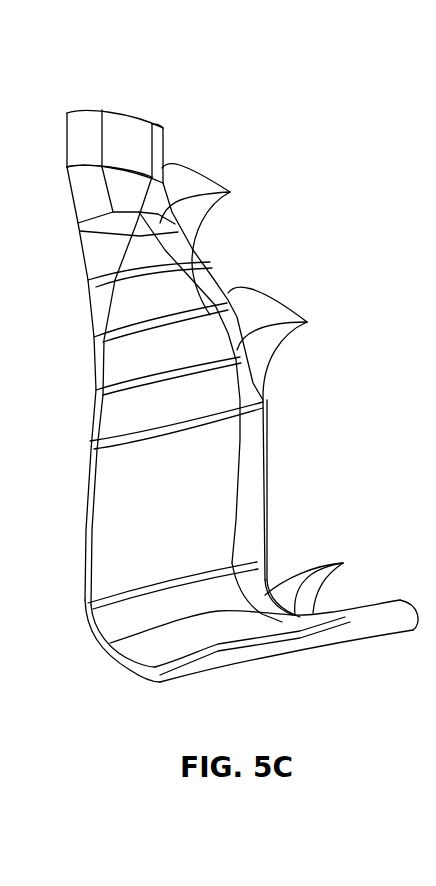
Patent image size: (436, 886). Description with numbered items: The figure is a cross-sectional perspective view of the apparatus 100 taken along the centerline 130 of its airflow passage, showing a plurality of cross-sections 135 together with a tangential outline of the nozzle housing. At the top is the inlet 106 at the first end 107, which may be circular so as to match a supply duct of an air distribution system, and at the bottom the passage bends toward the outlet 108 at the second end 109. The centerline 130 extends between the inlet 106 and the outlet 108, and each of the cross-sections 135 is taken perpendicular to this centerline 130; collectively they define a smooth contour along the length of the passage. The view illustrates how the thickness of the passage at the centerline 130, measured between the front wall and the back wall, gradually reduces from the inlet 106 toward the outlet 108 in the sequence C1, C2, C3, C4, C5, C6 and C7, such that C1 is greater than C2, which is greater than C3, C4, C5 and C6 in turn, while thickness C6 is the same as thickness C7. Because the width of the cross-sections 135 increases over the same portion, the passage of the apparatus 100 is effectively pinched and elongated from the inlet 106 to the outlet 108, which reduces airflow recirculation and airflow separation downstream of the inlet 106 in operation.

The apparatus 100 is at (225, 114).
The inlet 106 is at (81, 134).
The first end 107 is at (85, 167).
The outlet 108 is at (251, 634).
The second end 109 is at (387, 633).
The centerline 130 is at (86, 537).
The cross-sections 135 is at (230, 192).
The thickness at the centerline of the first cross-section C1 is at (90, 176).
The thickness at the centerline of the second cross-section C2 is at (90, 235).
The thickness at the centerline of the third cross-section C3 is at (103, 288).
The thickness at the centerline of the fourth cross-section C4 is at (103, 343).
The thickness at the centerline of the fifth cross-section C5 is at (100, 398).
The thickness at the centerline of the sixth cross-section C6 is at (92, 452).
The thickness at the centerline of the seventh cross-section C7 is at (90, 607).